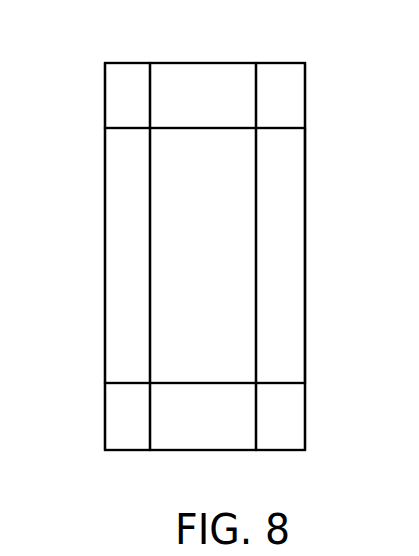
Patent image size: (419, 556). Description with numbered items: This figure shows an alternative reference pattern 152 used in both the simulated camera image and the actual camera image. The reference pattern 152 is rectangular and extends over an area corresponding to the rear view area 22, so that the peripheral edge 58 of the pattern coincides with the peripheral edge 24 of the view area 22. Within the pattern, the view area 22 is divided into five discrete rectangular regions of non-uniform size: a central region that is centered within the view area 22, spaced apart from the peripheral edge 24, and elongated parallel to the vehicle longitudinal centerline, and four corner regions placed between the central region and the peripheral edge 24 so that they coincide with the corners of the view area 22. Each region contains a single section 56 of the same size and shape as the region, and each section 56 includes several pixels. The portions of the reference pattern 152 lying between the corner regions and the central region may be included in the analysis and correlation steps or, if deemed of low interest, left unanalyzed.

The alternative reference pattern 152 is at (160, 40).
The section 56 is at (115, 127).
The peripheral edge 58 is at (308, 347).
The rear view area 22 is at (292, 187).
The peripheral edge 24 is at (104, 346).